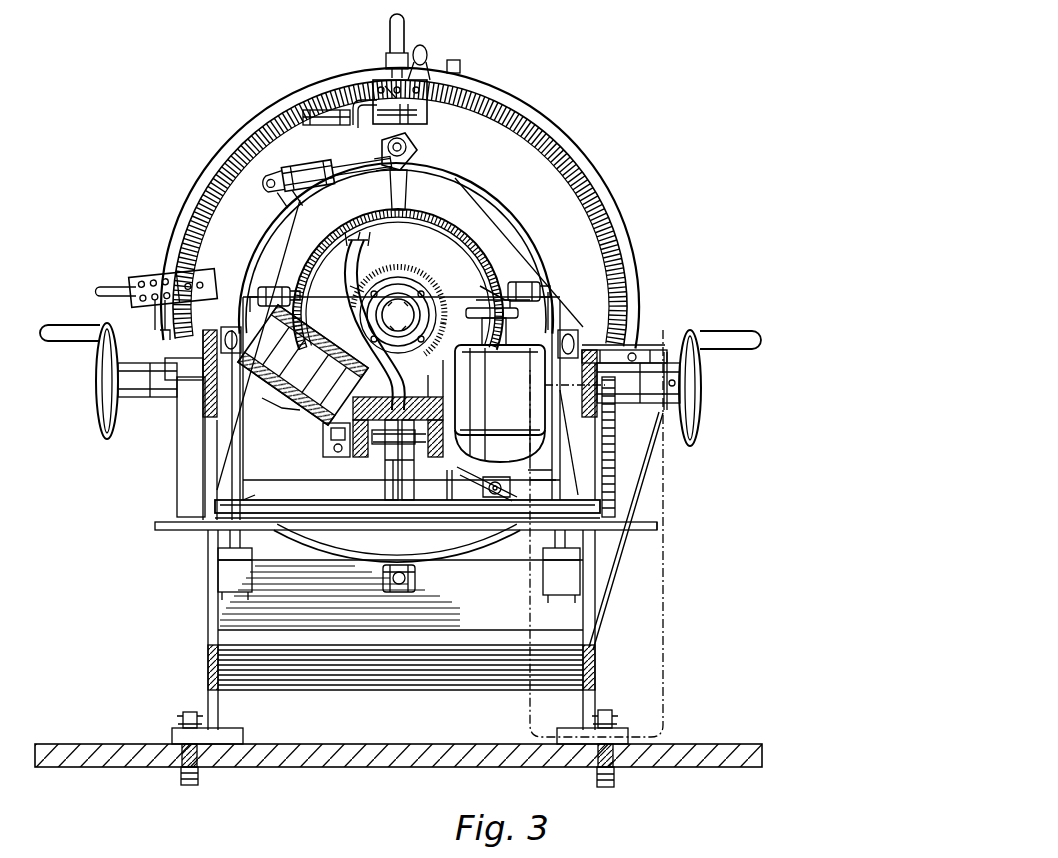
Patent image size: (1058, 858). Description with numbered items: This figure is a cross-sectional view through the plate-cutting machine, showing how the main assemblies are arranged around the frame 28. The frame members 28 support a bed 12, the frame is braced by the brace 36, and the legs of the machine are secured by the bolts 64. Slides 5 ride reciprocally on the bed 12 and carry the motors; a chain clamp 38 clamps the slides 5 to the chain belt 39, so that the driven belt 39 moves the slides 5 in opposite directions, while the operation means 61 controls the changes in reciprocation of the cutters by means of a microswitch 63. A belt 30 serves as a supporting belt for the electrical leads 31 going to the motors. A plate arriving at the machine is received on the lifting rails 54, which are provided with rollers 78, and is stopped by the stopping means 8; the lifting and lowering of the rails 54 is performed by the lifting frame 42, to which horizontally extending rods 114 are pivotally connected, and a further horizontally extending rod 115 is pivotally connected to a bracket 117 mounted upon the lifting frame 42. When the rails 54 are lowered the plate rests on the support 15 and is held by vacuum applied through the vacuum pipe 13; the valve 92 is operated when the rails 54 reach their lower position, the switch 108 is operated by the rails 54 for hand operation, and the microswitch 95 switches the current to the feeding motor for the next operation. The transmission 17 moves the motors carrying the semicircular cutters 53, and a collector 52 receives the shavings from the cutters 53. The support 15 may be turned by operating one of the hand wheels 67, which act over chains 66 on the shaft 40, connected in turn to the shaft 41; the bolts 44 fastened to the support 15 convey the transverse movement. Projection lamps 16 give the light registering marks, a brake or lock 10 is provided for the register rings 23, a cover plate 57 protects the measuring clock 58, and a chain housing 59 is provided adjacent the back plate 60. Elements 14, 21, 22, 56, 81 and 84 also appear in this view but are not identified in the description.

The slides 5 is at (430, 392).
The stopping means 8 is at (408, 172).
The brake or lock for the register rings 10 is at (388, 28).
The bed 12 is at (385, 468).
The vacuum pipe 13 is at (362, 262).
The gear ring 14 is at (398, 272).
The support 15 is at (446, 224).
The projection lamps 16 is at (142, 270).
The transmission 17 is at (418, 288).
The cylinder 21 is at (343, 126).
The latch bracket 22 is at (420, 123).
The register rings 23 is at (492, 93).
The frame 28 is at (596, 386).
The belt 30 is at (323, 436).
The electrical leads 31 is at (339, 452).
The brace 36 is at (207, 678).
The chain clamp 38 is at (407, 507).
The chain belt 39 is at (390, 450).
The shaft 40 is at (275, 530).
The shaft 41 is at (657, 530).
The lifting frame 42 is at (246, 452).
The bolts 44 is at (392, 478).
The collector 52 is at (296, 360).
The semicircular cutters 53 is at (282, 398).
The lifting rails 54 is at (276, 285).
The gear housing 56 is at (630, 352).
The cover plate 57 is at (665, 356).
The measuring clock 58 is at (652, 356).
The chain housing 59 is at (177, 436).
The back plate 60 is at (206, 551).
The operation means 61 is at (448, 492).
The microswitch 63 is at (542, 492).
The bolts 64 is at (198, 773).
The chains 66 is at (615, 452).
The hand wheels 67 is at (100, 402).
The rollers 78 is at (490, 287).
The brace rod 81 is at (608, 577).
The hydraulic cylinder 84 is at (302, 170).
The valve 92 is at (487, 490).
The microswitch 95 is at (496, 494).
The switch 108 is at (225, 383).
The horizontally extending rods 114 is at (231, 320).
The horizontally extending rod 115 is at (383, 572).
The bracket 117 is at (416, 577).